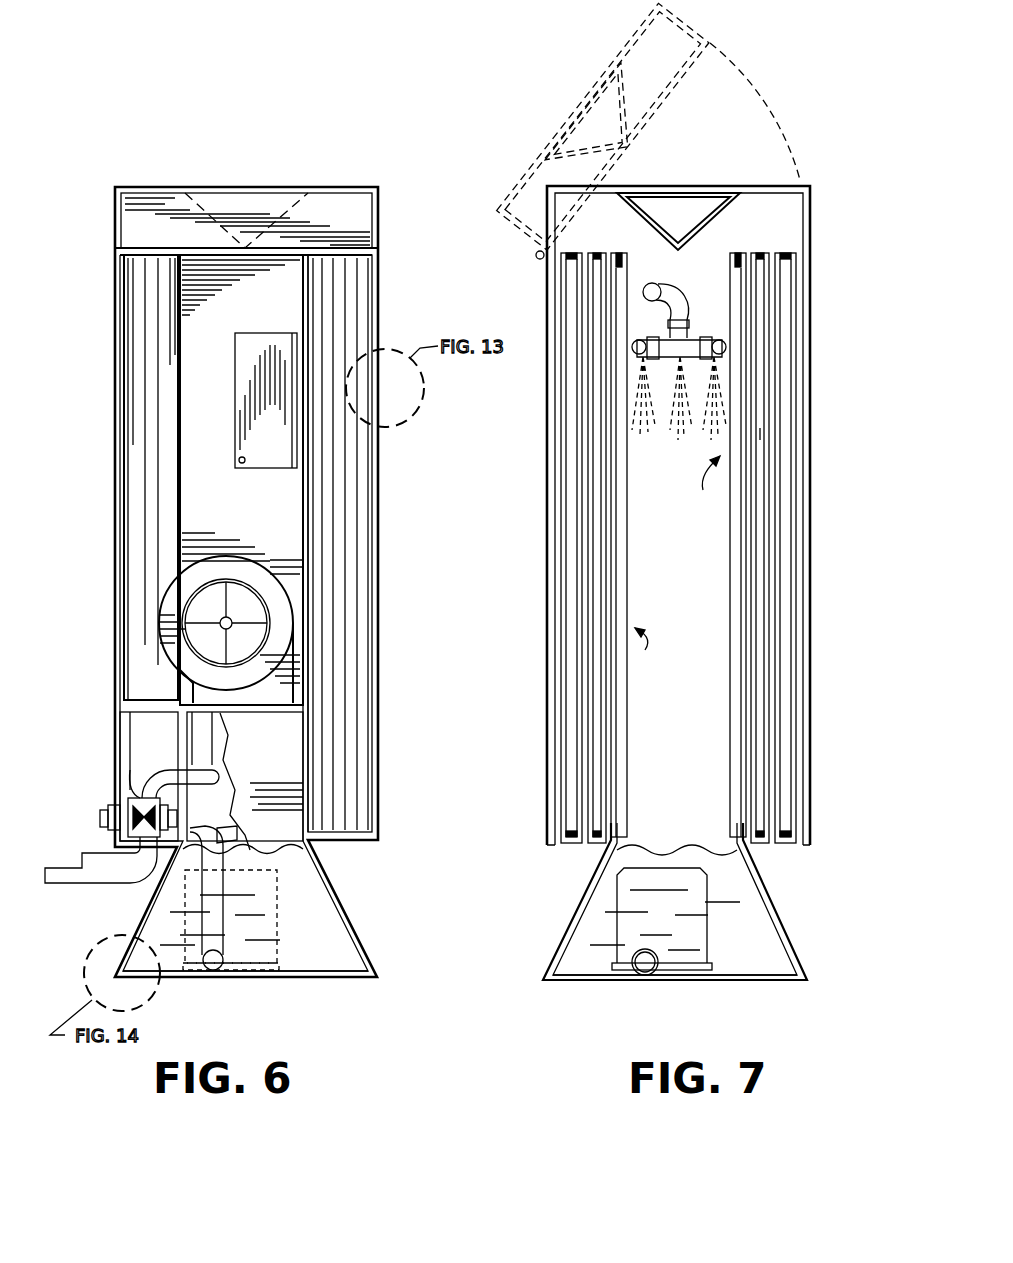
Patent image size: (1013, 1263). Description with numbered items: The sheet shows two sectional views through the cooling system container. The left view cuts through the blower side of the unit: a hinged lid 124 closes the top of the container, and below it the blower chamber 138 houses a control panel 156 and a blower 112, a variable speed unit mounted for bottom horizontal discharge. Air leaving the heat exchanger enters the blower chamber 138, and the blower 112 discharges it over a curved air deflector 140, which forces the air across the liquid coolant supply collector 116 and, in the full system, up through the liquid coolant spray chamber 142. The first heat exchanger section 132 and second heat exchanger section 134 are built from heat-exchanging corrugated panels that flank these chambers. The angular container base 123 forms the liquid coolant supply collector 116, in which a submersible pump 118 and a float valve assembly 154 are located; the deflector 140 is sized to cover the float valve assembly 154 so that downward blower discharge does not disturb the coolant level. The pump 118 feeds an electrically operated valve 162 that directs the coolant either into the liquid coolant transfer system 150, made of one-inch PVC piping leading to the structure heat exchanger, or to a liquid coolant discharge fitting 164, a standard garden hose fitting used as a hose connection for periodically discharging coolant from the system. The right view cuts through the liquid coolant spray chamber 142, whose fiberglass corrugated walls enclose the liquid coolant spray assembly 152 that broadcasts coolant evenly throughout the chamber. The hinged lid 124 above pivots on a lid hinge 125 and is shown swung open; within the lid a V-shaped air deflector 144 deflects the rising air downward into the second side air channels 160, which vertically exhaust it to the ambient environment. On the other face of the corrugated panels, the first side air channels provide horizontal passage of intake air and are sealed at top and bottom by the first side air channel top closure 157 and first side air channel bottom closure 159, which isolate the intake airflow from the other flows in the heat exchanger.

In FIG. 6, the blower 112 is at (183, 662).
In FIG. 6, the liquid coolant supply collector 116 is at (325, 936).
In FIG. 7, the liquid coolant supply collector 116 is at (757, 938).
In FIG. 6, the pump 118 is at (300, 872).
In FIG. 7, the pump 118 is at (710, 880).
In FIG. 6, the container base 123 is at (355, 930).
In FIG. 7, the container base 123 is at (790, 935).
In FIG. 6, the hinged lid 124 is at (115, 203).
In FIG. 7, the hinged lid 124 is at (622, 45).
In FIG. 7, the lid hinge 125 is at (536, 256).
In FIG. 6, the first heat exchanger section 132 is at (345, 563).
In FIG. 7, the first heat exchanger section 132 is at (703, 490).
In FIG. 6, the second heat exchanger section 134 is at (153, 567).
In FIG. 7, the second heat exchanger section 134 is at (645, 650).
In FIG. 6, the blower chamber 138 is at (254, 518).
In FIG. 6, the air deflector 140 is at (270, 745).
In FIG. 7, the liquid coolant spray chamber 142 is at (692, 567).
In FIG. 7, the air deflector 144 is at (646, 198).
In FIG. 6, the liquid coolant transfer system 150 is at (165, 770).
In FIG. 7, the liquid coolant spray assembly 152 is at (690, 335).
In FIG. 6, the float valve assembly 154 is at (310, 833).
In FIG. 6, the control panel 156 is at (235, 382).
In FIG. 7, the first side air channel top closure 157 is at (598, 253).
In FIG. 7, the first side air channel bottom closure 159 is at (597, 830).
In FIG. 7, the second side air channels 160 is at (770, 560).
In FIG. 6, the electrically operated valve 162 is at (130, 778).
In FIG. 6, the liquid coolant discharge fitting 164 is at (100, 812).